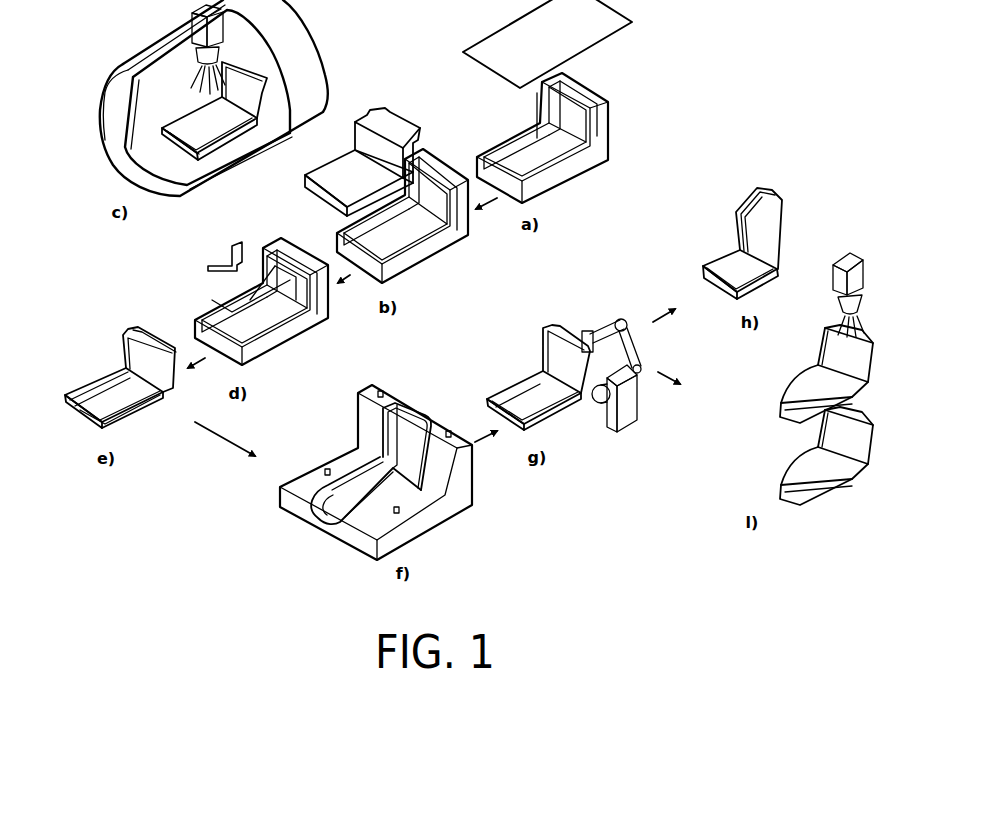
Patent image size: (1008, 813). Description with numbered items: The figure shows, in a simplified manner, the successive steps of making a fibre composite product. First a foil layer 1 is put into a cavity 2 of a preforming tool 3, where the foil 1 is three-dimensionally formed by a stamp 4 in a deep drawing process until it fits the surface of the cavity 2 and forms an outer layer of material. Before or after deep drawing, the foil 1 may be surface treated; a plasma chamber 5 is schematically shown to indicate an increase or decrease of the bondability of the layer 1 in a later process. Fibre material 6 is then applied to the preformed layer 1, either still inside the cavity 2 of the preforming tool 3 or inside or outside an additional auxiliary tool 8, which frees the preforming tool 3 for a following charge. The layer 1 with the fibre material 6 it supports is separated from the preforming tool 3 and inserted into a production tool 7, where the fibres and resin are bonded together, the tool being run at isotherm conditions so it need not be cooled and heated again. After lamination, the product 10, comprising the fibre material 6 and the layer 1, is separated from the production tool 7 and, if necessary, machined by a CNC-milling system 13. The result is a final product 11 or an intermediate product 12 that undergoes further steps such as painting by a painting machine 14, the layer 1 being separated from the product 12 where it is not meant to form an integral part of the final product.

The foil layer 1 is at (50, 358).
The cavity 2 is at (555, 152).
The preforming tool 3 is at (622, 116).
The stamp 4 is at (388, 123).
The plasma chamber 5 is at (285, 37).
The fibre material 6 is at (458, 537).
The production tool 7 is at (458, 488).
The auxiliary tool 8 is at (297, 328).
The product 10 is at (489, 374).
The final product 11 is at (684, 264).
The intermediate product 12 is at (752, 392).
The CNC-milling system 13 is at (612, 417).
The painting machine 14 is at (825, 295).